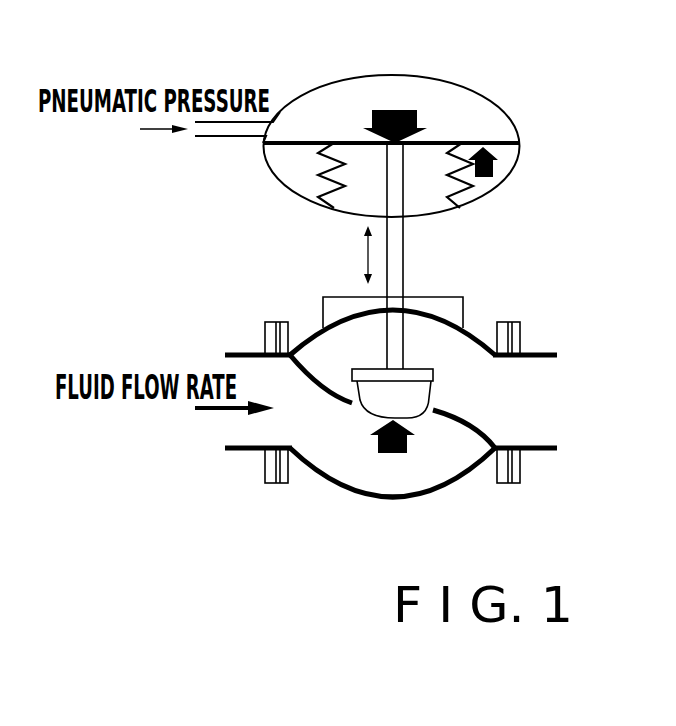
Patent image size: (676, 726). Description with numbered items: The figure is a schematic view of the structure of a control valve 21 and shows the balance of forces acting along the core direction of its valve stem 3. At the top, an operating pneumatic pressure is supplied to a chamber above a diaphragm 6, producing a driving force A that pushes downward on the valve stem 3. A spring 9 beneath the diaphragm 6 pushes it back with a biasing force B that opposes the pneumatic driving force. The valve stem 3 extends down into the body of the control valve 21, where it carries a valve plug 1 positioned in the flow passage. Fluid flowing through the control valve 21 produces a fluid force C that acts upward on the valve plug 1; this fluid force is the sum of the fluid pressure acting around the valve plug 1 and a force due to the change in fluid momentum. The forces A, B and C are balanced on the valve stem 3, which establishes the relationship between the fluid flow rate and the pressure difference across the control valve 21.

The valve plug 1 is at (415, 397).
The valve stem 3 is at (408, 256).
The diaphragm 6 is at (502, 142).
The spring 9 is at (322, 175).
The control valve 21 is at (490, 320).
The driving force A is at (398, 110).
The biasing force B is at (493, 163).
The fluid force C is at (408, 440).